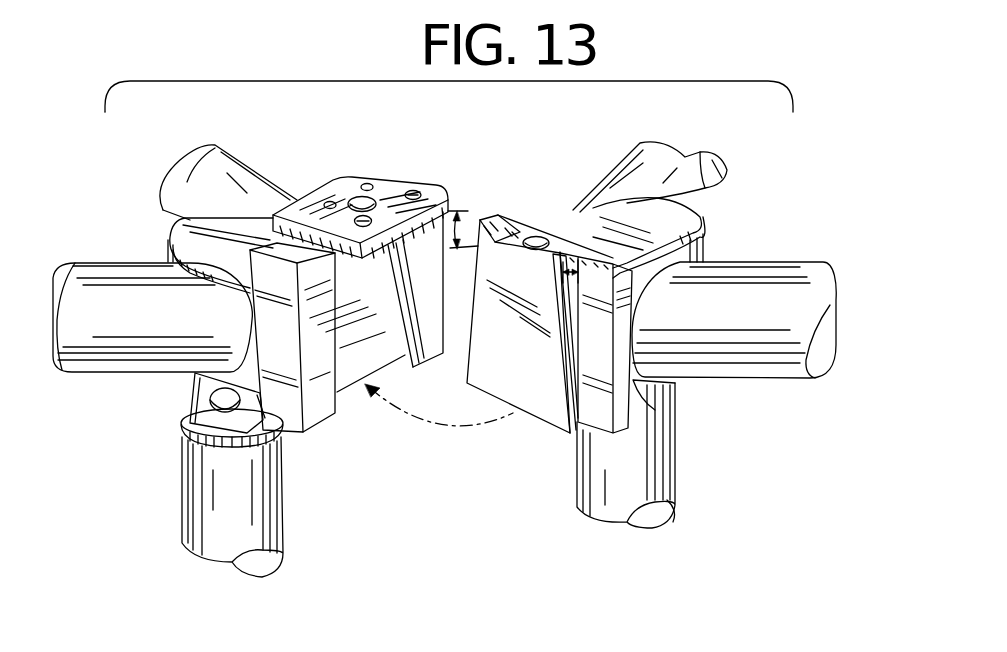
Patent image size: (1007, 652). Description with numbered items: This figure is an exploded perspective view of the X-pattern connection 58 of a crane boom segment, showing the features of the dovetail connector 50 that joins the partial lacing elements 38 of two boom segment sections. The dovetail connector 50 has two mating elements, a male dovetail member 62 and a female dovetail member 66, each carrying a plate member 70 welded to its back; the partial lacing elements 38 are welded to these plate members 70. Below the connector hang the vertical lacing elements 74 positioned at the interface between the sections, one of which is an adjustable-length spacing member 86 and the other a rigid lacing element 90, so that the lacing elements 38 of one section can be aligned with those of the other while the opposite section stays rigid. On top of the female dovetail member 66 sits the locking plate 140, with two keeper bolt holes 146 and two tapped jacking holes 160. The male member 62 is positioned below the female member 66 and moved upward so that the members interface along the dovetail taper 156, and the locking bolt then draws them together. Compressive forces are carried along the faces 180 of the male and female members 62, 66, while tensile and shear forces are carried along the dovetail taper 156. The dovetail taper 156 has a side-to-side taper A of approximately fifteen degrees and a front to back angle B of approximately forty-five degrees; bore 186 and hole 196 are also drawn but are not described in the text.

The partial lacing element 38 is at (245, 170).
The dovetail connector 50 is at (481, 152).
The X-pattern connection 58 is at (428, 432).
The male dovetail member 62 is at (548, 412).
The female dovetail member 66 is at (312, 415).
The plate member 70 is at (168, 238).
The vertical lacing element 74 is at (282, 527).
The adjustable-length spacing member 86 is at (183, 505).
The rigid lacing element 90 is at (668, 497).
The locking plate 140 is at (437, 194).
The keeper bolt hole 146 is at (330, 200).
The dovetail taper 156 is at (410, 355).
The tapped jacking hole 160 is at (413, 190).
The face 180 is at (381, 359).
The central bore 186 is at (378, 200).
The hole 196 is at (535, 236).
The side-to-side taper A is at (568, 270).
The front to back angle B is at (463, 231).